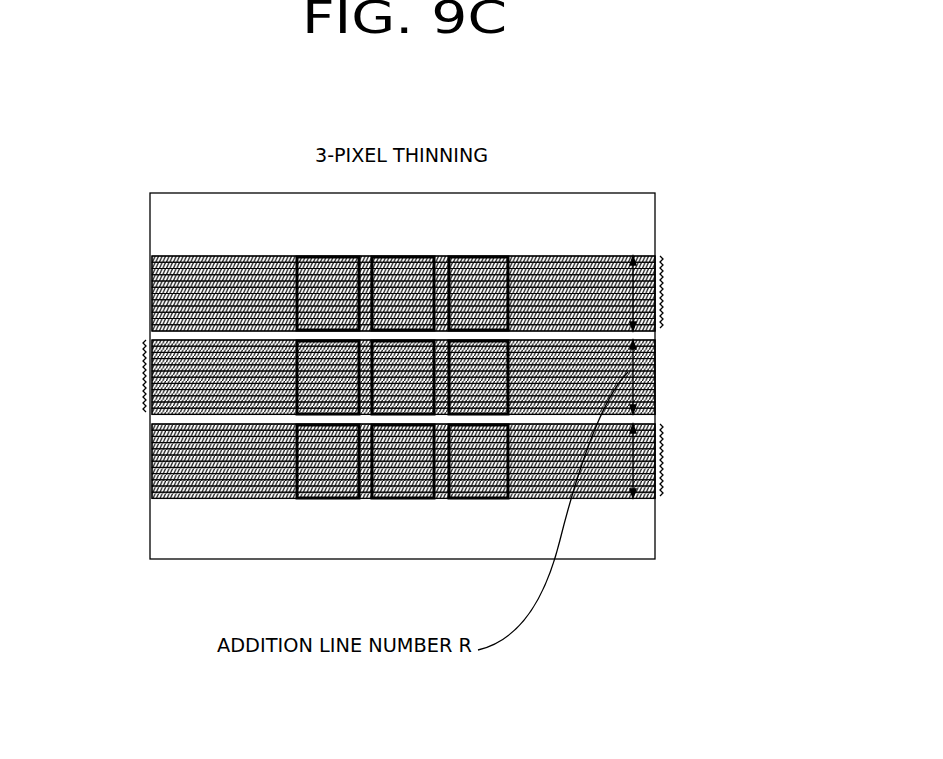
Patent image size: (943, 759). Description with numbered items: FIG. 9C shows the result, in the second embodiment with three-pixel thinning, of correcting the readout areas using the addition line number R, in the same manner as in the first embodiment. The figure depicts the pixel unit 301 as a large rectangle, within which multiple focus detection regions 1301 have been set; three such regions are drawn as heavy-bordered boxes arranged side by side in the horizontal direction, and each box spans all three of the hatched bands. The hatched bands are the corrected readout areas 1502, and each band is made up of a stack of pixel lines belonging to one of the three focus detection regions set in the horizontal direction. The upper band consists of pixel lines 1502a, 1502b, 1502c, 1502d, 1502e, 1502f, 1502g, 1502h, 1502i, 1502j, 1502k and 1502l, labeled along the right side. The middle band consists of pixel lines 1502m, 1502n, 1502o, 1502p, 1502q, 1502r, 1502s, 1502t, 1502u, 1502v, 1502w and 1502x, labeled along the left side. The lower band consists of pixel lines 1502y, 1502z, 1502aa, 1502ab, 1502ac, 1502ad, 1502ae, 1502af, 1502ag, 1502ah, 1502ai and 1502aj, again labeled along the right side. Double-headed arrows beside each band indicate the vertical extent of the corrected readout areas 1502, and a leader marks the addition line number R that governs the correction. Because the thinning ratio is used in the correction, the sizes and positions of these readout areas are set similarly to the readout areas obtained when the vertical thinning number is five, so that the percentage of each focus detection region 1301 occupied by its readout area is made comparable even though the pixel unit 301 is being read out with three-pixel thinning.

The pixel unit 301 is at (488, 193).
The focus detection region 1301 is at (333, 253).
The corrected readout areas 1502 is at (266, 332).
The pixel line 1502a is at (662, 258).
The pixel line 1502b is at (662, 264).
The pixel line 1502c is at (662, 271).
The pixel line 1502d is at (662, 277).
The pixel line 1502e is at (662, 283).
The pixel line 1502f is at (662, 290).
The pixel line 1502g is at (662, 296).
The pixel line 1502h is at (662, 302).
The pixel line 1502i is at (662, 309).
The pixel line 1502j is at (662, 315).
The pixel line 1502k is at (662, 321).
The pixel line 1502l is at (662, 328).
The pixel line 1502m is at (148, 343).
The pixel line 1502n is at (148, 349).
The pixel line 1502o is at (148, 356).
The pixel line 1502p is at (148, 362).
The pixel line 1502q is at (148, 368).
The pixel line 1502r is at (148, 375).
The pixel line 1502s is at (148, 381).
The pixel line 1502t is at (148, 387).
The pixel line 1502u is at (148, 394).
The pixel line 1502v is at (148, 400).
The pixel line 1502w is at (148, 406).
The pixel line 1502x is at (148, 412).
The pixel line 1502y is at (662, 426).
The pixel line 1502z is at (662, 432).
The pixel line 1502aa is at (662, 439).
The pixel line 1502ab is at (662, 445).
The pixel line 1502ac is at (662, 451).
The pixel line 1502ad is at (662, 458).
The pixel line 1502ae is at (662, 464).
The pixel line 1502af is at (662, 470).
The pixel line 1502ag is at (662, 477).
The pixel line 1502ah is at (662, 483).
The pixel line 1502ai is at (662, 489).
The pixel line 1502aj is at (662, 496).